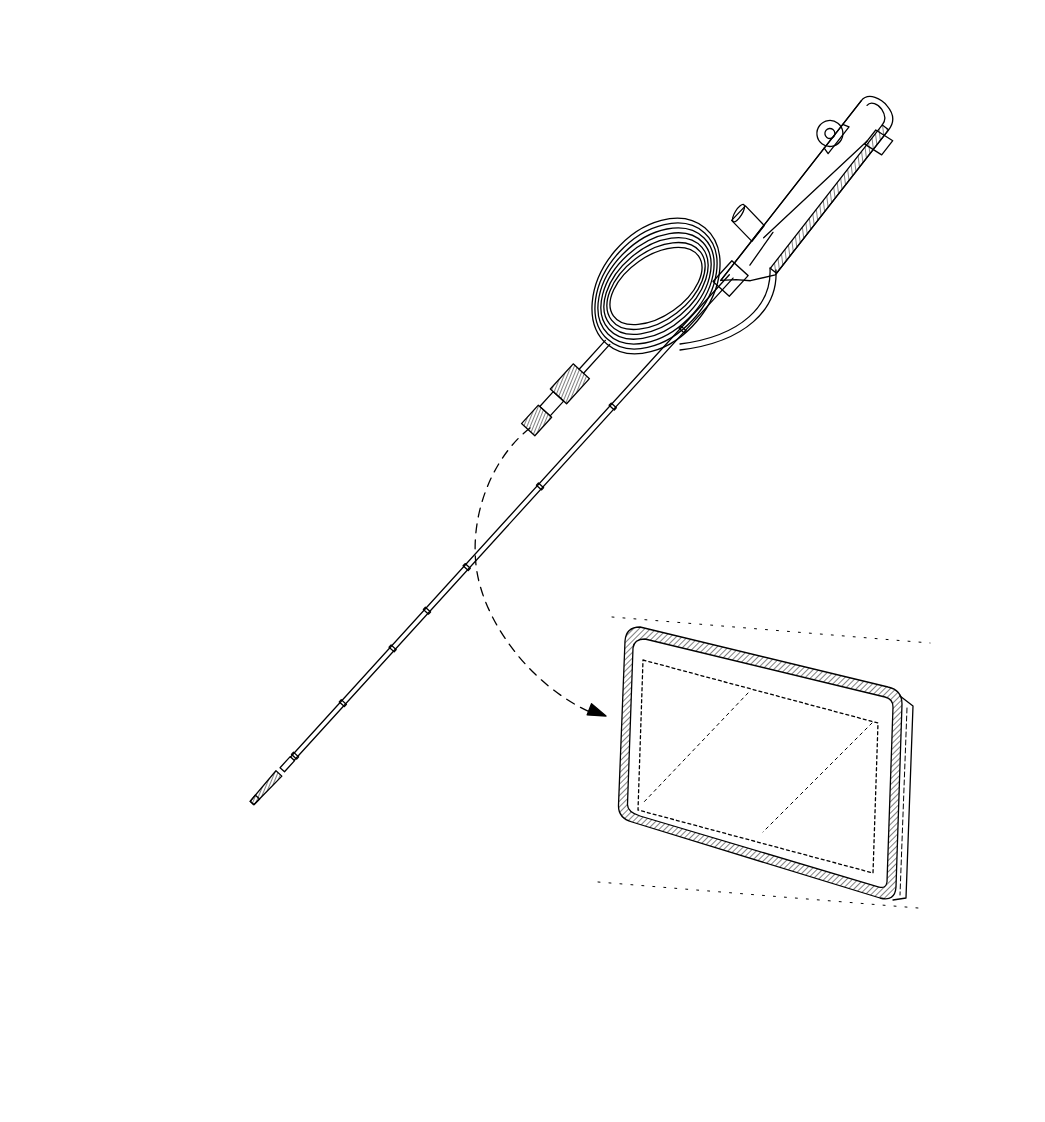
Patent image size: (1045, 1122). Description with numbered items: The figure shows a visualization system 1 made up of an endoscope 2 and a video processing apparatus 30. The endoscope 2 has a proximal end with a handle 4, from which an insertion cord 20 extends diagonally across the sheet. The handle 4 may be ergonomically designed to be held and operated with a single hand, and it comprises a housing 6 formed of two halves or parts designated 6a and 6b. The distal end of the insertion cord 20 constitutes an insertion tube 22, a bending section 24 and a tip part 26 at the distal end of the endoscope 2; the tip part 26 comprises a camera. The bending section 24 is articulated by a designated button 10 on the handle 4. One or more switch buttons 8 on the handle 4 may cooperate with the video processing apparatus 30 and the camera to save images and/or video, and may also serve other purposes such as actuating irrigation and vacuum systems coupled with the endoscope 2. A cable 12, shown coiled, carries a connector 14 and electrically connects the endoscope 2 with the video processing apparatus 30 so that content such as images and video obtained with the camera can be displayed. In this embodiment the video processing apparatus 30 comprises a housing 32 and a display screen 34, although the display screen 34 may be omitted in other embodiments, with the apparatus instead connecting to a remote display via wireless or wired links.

The visualization system 1 is at (178, 367).
The endoscope 2 is at (442, 283).
The handle 4 is at (713, 152).
The housing 6 is at (798, 176).
The housing half 6a is at (790, 186).
The housing half 6b is at (795, 205).
The switch buttons 8 is at (822, 128).
The button 10 is at (885, 153).
The cable 12 is at (603, 250).
The connector 14 is at (548, 381).
The insertion cord 20 is at (322, 523).
The insertion tube 22 is at (420, 616).
The bending section 24 is at (276, 778).
The tip part 26 is at (252, 800).
The video processing apparatus 30 is at (790, 630).
The housing 32 is at (658, 637).
The display screen 34 is at (723, 697).